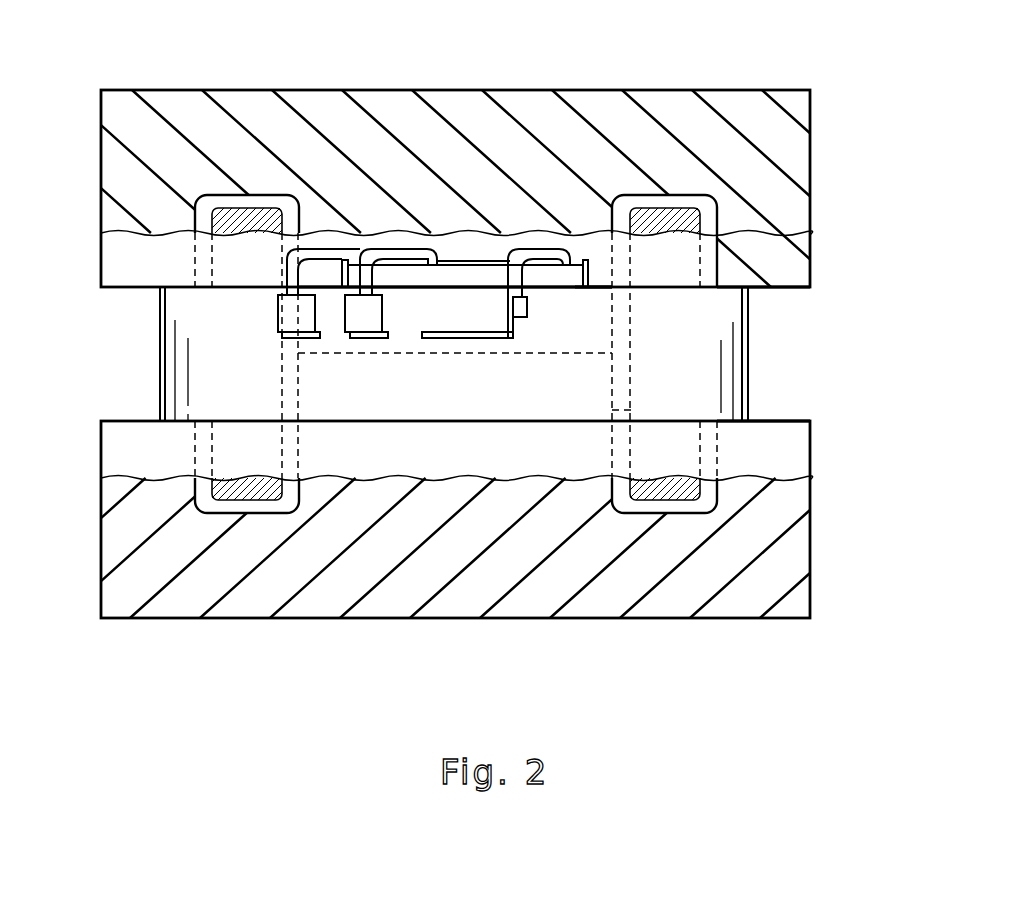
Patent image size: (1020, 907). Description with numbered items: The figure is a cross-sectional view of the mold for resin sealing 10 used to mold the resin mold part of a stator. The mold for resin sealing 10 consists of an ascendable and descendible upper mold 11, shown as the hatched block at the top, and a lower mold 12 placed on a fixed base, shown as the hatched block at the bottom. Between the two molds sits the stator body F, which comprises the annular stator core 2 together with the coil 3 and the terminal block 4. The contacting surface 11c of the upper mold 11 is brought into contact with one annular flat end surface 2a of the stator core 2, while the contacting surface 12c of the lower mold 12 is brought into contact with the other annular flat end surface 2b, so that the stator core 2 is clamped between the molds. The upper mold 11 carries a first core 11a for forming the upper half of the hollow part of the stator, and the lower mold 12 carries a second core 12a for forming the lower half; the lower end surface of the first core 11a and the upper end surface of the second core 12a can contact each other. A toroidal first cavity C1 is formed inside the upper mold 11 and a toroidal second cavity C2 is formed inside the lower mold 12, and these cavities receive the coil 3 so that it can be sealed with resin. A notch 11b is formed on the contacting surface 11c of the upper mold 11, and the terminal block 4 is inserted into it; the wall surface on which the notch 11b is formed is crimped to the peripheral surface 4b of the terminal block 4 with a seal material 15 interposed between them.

The upper mold 11 is at (806, 120).
The first core 11a is at (613, 311).
The notch 11b is at (588, 265).
The contacting surface 11c is at (777, 290).
The lower mold 12 is at (812, 522).
The second core 12a is at (633, 410).
The contacting surface 12c is at (797, 421).
The first cavity C1 is at (205, 203).
The second cavity C2 is at (208, 500).
The coil 3 is at (238, 212).
The stator core 2 is at (750, 353).
The annular flat end surface 2a is at (173, 287).
The annular flat end surface 2b is at (173, 421).
The seal material 15 is at (455, 262).
The terminal block 4 is at (410, 283).
The peripheral surface 4b is at (473, 260).
The stator body F is at (800, 323).
The mold for resin sealing 10 is at (421, 666).